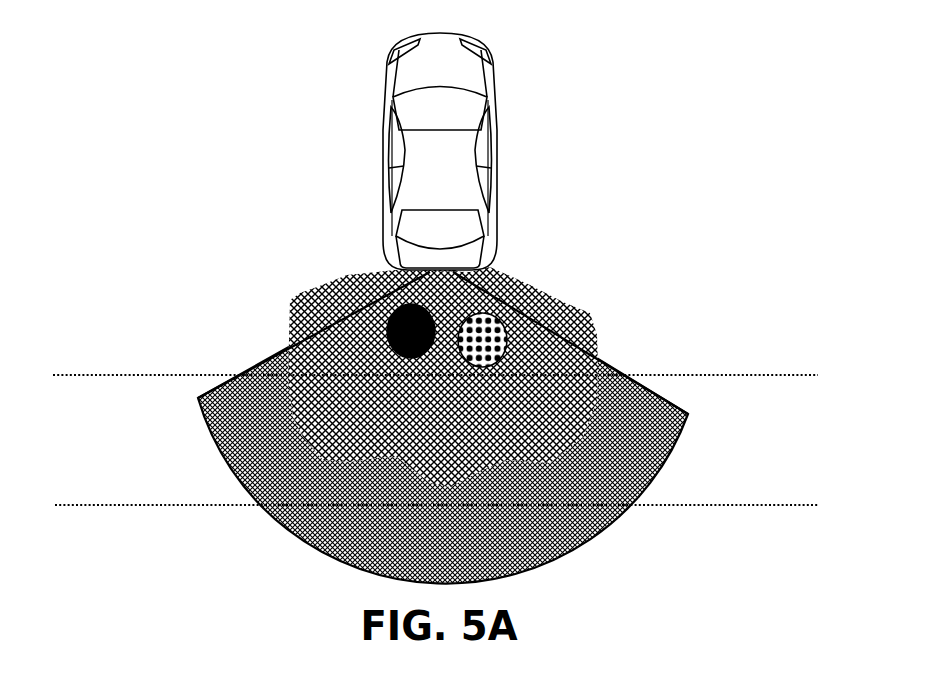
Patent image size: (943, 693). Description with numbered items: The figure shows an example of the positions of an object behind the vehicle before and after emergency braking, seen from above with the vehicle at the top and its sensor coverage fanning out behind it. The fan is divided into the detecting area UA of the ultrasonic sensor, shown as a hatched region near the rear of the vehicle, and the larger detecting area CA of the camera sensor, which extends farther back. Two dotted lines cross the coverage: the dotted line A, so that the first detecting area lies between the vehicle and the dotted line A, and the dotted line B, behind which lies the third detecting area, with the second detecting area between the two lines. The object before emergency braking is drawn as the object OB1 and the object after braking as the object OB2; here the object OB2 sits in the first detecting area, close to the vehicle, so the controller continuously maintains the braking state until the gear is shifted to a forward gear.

The detecting area of ultrasonic sensor UA is at (196, 66).
The detecting area of camera sensor CA is at (196, 110).
The object before emergency braking OB1 is at (314, 251).
The object after emergency braking OB2 is at (350, 276).
The dotted line A is at (424, 375).
The dotted line B is at (425, 505).